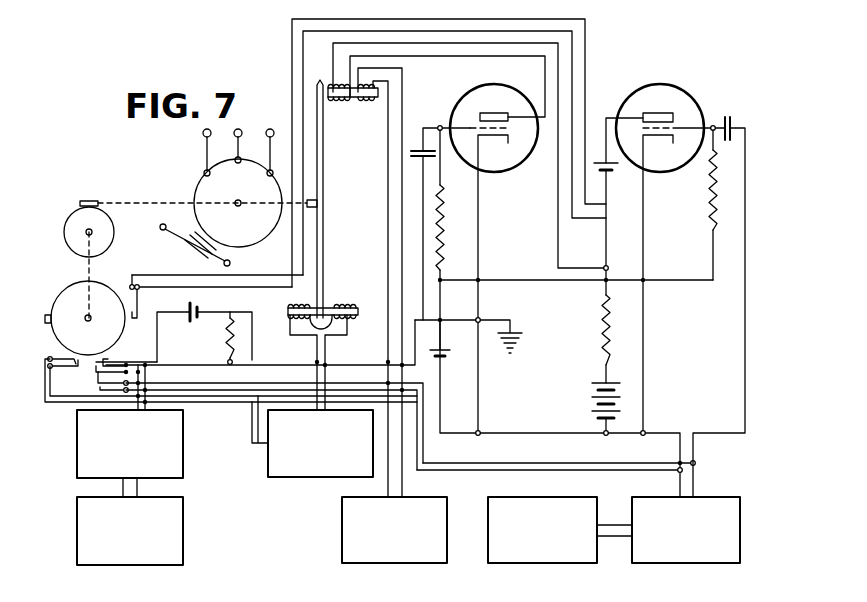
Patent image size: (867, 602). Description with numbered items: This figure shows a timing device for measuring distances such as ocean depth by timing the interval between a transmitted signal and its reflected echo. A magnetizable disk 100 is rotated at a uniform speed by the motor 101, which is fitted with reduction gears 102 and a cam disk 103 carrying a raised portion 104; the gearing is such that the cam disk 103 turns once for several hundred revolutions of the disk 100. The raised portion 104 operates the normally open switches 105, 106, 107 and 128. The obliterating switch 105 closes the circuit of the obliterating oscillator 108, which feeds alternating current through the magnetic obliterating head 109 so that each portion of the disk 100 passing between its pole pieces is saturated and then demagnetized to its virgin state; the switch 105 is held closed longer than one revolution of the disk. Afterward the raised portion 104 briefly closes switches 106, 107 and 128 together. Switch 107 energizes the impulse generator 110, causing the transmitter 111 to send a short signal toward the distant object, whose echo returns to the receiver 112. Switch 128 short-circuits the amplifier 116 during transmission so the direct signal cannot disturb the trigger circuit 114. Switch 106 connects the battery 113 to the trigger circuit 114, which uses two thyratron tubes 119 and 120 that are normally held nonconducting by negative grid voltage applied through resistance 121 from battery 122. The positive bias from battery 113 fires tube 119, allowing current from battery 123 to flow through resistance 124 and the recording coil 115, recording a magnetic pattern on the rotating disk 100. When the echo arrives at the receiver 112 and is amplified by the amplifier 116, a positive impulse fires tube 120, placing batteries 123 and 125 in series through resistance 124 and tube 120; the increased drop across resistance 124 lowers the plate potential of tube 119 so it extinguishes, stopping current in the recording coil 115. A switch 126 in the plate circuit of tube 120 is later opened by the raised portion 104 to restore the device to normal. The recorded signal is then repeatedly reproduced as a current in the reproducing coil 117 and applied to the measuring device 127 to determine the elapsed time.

The magnetizable disk 100 is at (323, 232).
The motor 101 is at (198, 196).
The reduction gears 102 is at (74, 212).
The cam disk 103 is at (94, 286).
The raised portion 104 is at (48, 313).
The obliterating switch 105 is at (70, 360).
The switch 106 is at (110, 358).
The switch 107 is at (98, 377).
The obliterating oscillator 108 is at (292, 485).
The magnetic obliterating head 109 is at (334, 306).
The impulse generator 110 is at (76, 460).
The transmitter 111 is at (160, 565).
The receiver 112 is at (573, 565).
The battery 113 is at (192, 318).
The trigger circuit 114 is at (570, 310).
The recording coil 115 is at (333, 100).
The amplifier 116 is at (710, 565).
The reproducing coil 117 is at (360, 100).
The thyratron tube 119 is at (476, 85).
The thyratron tube 120 is at (681, 86).
The resistance 121 is at (442, 206).
The battery 122 is at (446, 358).
The battery 123 is at (592, 410).
The resistance 124 is at (604, 336).
The battery 125 is at (608, 172).
The switch 126 is at (139, 300).
The measuring device 127 is at (415, 565).
The switch 128 is at (100, 389).